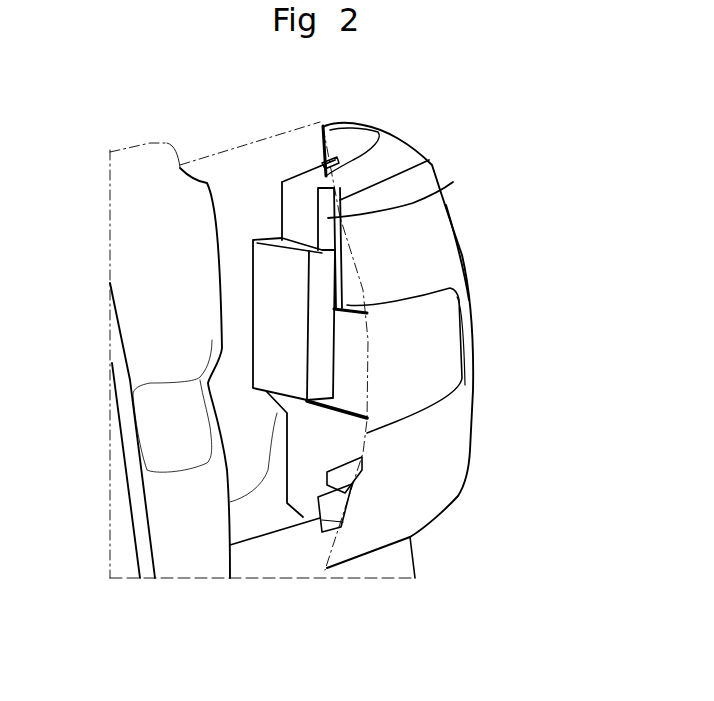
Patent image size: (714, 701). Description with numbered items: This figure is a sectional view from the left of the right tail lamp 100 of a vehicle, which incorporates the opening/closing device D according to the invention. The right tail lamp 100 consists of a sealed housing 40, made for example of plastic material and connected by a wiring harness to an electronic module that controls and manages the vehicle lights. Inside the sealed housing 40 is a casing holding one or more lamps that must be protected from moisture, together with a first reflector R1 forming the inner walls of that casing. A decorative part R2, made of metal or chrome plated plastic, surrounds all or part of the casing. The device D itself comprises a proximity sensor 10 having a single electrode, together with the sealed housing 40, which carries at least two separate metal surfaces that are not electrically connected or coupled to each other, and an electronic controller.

The right tail lamp 100 is at (311, 308).
The proximity sensor 10 is at (268, 298).
The sealed housing 40 is at (454, 358).
The first reflector R1 is at (353, 350).
The decorative part R2 is at (453, 182).
The opening/closing device D is at (462, 243).